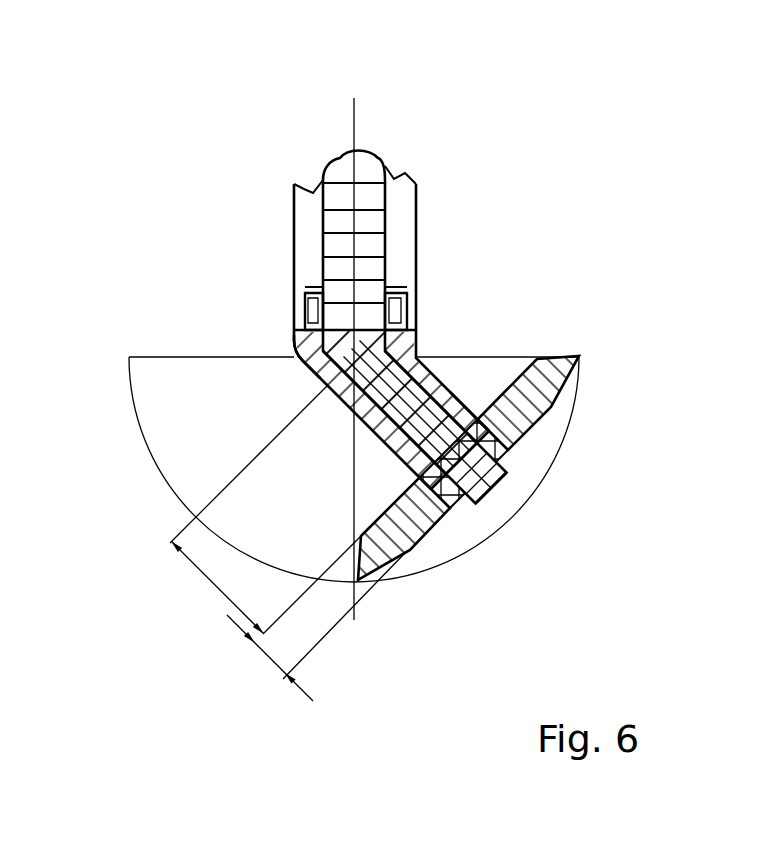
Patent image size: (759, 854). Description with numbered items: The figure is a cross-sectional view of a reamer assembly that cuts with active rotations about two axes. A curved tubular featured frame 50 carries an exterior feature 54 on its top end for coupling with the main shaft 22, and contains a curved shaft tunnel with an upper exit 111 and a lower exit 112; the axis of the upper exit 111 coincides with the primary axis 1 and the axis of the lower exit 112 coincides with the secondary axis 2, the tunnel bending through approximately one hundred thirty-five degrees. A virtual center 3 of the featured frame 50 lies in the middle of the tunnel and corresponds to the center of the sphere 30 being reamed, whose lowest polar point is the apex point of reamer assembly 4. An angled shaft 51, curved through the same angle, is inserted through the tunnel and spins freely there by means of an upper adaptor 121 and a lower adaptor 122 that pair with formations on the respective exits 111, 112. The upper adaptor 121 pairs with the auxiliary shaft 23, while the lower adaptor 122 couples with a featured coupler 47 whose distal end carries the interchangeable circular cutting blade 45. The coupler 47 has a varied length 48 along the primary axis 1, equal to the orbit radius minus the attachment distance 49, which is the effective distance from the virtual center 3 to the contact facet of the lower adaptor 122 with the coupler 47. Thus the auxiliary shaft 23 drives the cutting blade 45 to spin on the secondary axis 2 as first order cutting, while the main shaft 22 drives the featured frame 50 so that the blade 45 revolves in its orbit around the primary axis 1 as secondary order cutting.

The primary axis 1 is at (354, 125).
The secondary axis 2 is at (500, 480).
The virtual center 3 is at (295, 335).
The apex point of reamer assembly 4 is at (360, 583).
The main shaft 22 is at (308, 252).
The auxiliary shaft 23 is at (372, 152).
The sphere 30 is at (178, 499).
The interchangeable circular cutting blade 45 is at (578, 357).
The featured coupler 47 is at (472, 433).
The varied length of coupler 48 is at (272, 661).
The attachment distance 49 is at (216, 589).
The featured frame 50 is at (420, 350).
The angled shaft 51 is at (452, 378).
The exterior feature 54 is at (402, 287).
The upper exit of tunnel 111 is at (305, 373).
The lower exit of tunnel 112 is at (483, 405).
The upper adaptor 121 is at (305, 295).
The lower adaptor 122 is at (505, 480).